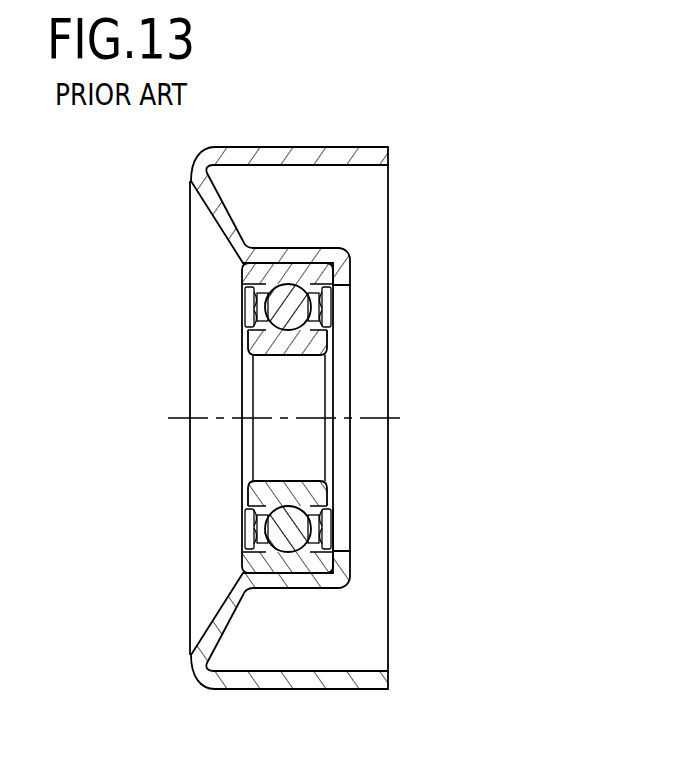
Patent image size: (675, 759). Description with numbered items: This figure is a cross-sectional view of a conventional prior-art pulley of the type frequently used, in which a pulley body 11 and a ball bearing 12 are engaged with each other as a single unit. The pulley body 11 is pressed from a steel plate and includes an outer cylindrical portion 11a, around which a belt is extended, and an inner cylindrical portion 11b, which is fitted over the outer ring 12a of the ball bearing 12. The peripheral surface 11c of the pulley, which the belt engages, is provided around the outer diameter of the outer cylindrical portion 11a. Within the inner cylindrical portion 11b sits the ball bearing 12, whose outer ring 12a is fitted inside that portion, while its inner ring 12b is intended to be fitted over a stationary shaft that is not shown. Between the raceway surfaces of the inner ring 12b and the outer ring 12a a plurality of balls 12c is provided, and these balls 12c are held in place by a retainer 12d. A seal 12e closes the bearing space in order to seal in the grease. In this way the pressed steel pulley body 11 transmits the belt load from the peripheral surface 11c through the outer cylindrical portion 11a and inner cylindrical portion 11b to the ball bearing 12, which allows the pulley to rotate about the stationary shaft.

The pulley body 11 is at (412, 144).
The outer cylindrical portion 11a is at (360, 160).
The inner cylindrical portion 11b is at (303, 252).
The peripheral surface 11c is at (272, 147).
The ball bearing 12 is at (211, 342).
The outer ring 12a is at (289, 308).
The inner ring 12b is at (296, 519).
The balls 12c is at (292, 309).
The retainer 12d is at (321, 524).
The seal 12e is at (333, 531).